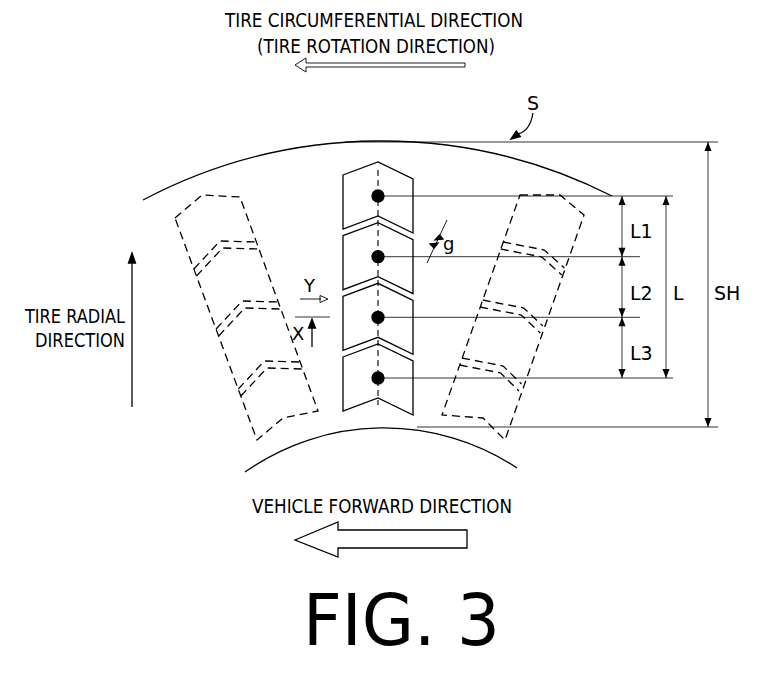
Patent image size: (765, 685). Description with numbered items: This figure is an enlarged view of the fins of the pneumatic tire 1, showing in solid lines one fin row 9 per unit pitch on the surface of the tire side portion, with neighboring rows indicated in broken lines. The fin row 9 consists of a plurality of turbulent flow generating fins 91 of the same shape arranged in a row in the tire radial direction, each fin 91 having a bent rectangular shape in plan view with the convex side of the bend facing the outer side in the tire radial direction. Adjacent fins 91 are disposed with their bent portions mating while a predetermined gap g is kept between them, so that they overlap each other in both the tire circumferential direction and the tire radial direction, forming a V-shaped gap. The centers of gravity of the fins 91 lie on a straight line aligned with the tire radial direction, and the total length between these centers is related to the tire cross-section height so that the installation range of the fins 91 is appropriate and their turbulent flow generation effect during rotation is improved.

The pneumatic tire 1 is at (580, 77).
The fin row 9 is at (352, 165).
The turbulent flow generating fin 91 is at (343, 185).